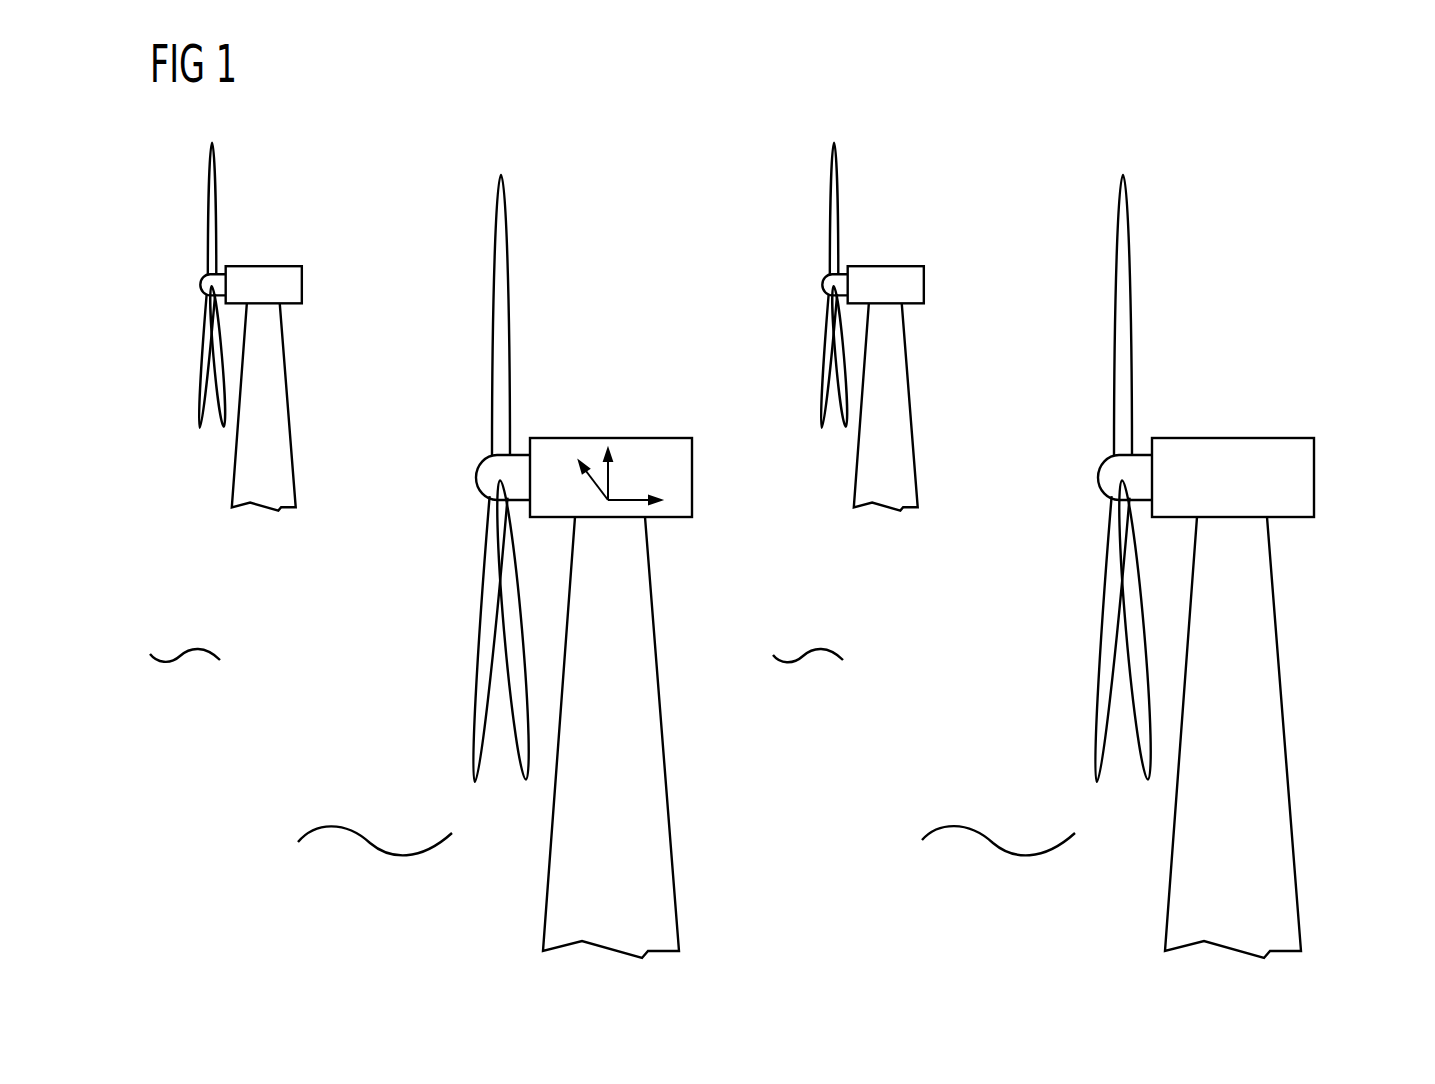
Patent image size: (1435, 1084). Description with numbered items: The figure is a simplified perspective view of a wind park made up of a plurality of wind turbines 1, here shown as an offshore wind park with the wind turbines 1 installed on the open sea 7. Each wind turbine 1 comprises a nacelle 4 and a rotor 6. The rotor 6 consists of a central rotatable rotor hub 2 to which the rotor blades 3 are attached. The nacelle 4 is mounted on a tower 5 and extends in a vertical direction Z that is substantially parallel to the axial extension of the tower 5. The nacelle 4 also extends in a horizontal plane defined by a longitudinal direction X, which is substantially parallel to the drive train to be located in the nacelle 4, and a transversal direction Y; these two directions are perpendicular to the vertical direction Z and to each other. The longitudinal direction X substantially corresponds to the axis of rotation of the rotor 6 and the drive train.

The wind turbine 1 is at (319, 214).
The rotor hub 2 is at (477, 475).
The rotor blades 3 is at (499, 325).
The nacelle 4 is at (662, 450).
The tower 5 is at (645, 698).
The rotor 6 is at (437, 348).
The open sea 7 is at (319, 617).